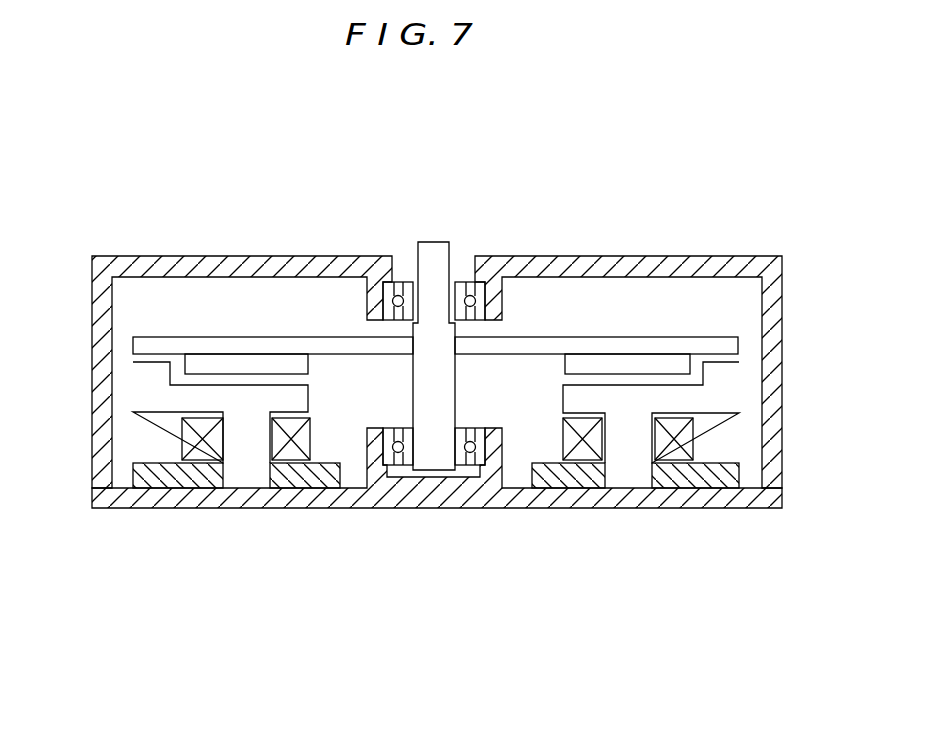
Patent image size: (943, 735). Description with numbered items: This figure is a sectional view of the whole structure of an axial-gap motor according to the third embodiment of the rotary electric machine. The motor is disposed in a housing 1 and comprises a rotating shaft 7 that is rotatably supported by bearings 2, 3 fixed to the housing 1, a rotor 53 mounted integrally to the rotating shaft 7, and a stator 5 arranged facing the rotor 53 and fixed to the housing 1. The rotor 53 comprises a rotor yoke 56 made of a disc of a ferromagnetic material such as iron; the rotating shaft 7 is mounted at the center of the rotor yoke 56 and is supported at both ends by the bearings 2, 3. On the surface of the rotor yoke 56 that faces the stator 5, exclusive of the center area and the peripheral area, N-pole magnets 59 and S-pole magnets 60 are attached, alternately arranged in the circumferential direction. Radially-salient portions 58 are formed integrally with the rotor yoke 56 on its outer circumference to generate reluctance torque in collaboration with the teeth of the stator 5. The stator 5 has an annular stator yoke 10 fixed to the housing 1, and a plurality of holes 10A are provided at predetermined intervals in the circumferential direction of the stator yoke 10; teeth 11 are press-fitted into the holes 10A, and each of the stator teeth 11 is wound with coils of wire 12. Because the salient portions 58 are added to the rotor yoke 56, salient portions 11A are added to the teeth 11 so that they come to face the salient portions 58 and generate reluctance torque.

The housing 1 is at (433, 508).
The bearing 2 is at (482, 292).
The bearing 3 is at (477, 432).
The stator 5 is at (752, 404).
The rotating shaft 7 is at (442, 257).
The stator yoke 10 is at (436, 515).
The holes 10A is at (267, 477).
The teeth 11 is at (435, 471).
The salient portions 11A is at (143, 377).
The coils of wire 12 is at (190, 437).
The rotor 53 is at (439, 331).
The rotor yoke 56 is at (318, 340).
The salient portions 58 is at (439, 322).
The N-pole magnets 59 is at (220, 360).
The S-pole magnets 60 is at (660, 362).